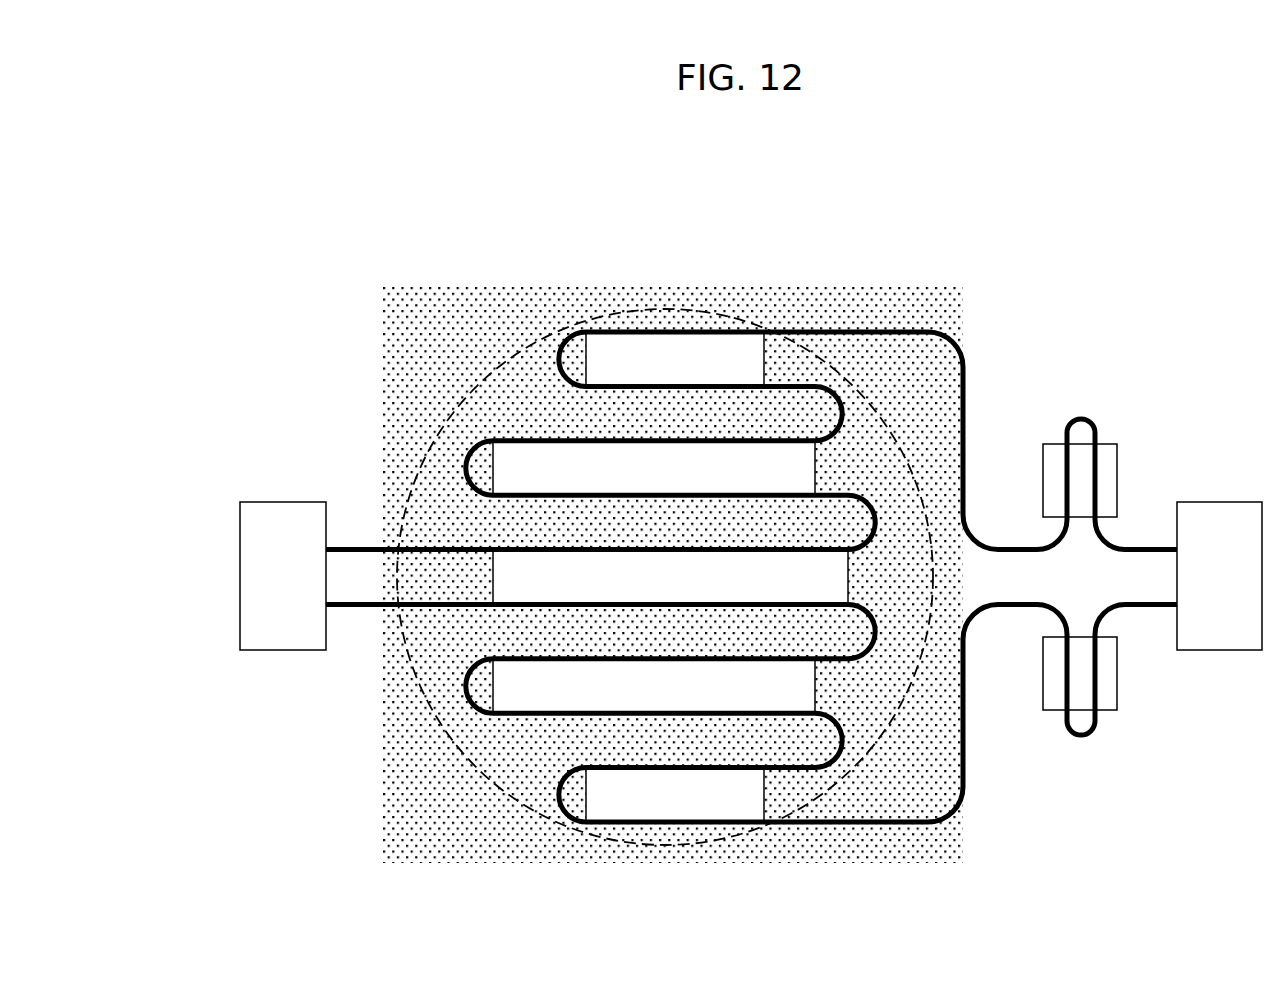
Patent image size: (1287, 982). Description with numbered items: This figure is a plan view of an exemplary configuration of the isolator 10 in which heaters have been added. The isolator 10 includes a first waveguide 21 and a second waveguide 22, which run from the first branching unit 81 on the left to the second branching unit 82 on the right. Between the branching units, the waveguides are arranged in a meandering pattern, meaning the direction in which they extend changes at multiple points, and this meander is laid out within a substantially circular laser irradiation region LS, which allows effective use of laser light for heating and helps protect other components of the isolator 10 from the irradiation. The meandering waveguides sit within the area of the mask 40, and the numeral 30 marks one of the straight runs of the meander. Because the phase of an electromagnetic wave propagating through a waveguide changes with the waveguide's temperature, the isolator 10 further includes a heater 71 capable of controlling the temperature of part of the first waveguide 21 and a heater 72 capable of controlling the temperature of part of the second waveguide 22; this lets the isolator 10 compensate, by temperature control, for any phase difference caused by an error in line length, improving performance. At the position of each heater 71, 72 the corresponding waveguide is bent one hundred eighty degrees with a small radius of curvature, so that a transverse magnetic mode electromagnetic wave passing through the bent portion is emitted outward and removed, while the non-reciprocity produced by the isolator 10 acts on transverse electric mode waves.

The isolator 10 is at (927, 225).
The first waveguide 21 is at (363, 547).
The second waveguide 22 is at (345, 612).
The heater resistor strip 30 is at (658, 357).
The mask 40 is at (435, 347).
The laser irradiation region LS is at (445, 745).
The heater 71 is at (1107, 476).
The heater 72 is at (1107, 672).
The first branching unit 81 is at (285, 518).
The second branching unit 82 is at (1215, 522).